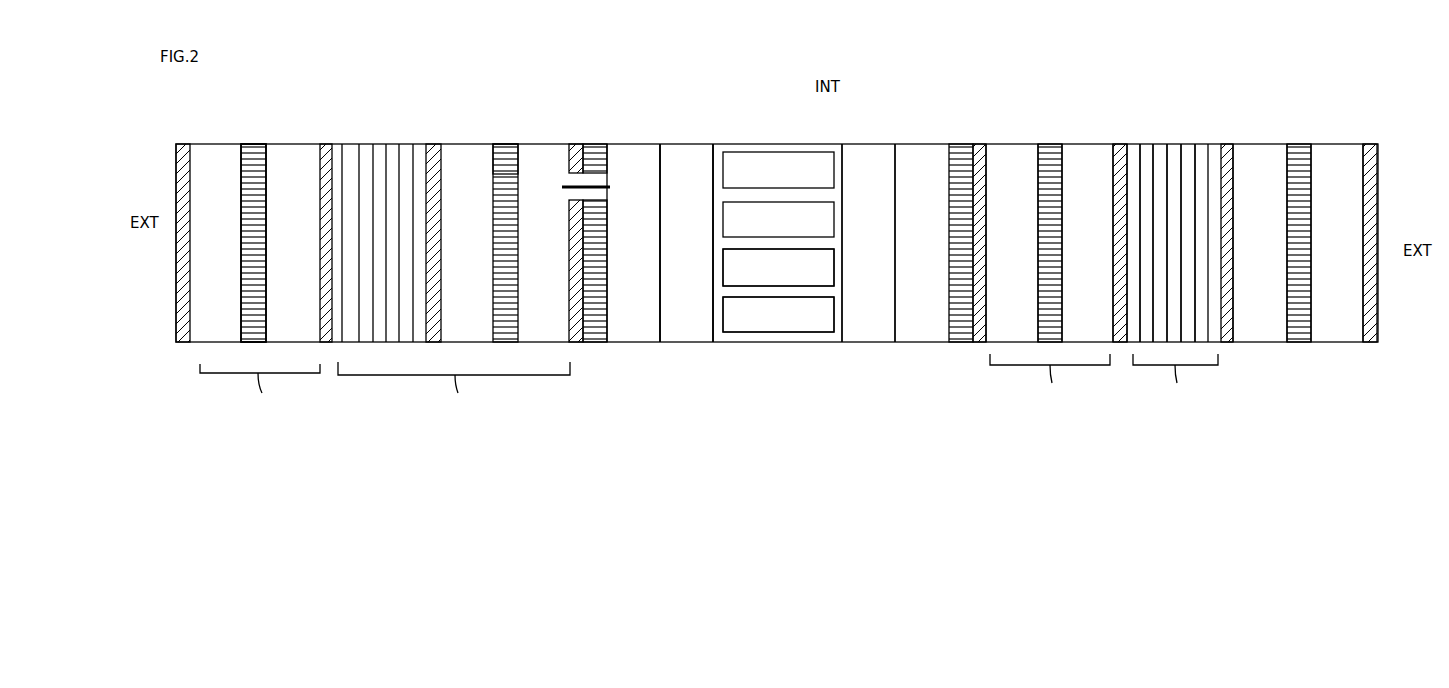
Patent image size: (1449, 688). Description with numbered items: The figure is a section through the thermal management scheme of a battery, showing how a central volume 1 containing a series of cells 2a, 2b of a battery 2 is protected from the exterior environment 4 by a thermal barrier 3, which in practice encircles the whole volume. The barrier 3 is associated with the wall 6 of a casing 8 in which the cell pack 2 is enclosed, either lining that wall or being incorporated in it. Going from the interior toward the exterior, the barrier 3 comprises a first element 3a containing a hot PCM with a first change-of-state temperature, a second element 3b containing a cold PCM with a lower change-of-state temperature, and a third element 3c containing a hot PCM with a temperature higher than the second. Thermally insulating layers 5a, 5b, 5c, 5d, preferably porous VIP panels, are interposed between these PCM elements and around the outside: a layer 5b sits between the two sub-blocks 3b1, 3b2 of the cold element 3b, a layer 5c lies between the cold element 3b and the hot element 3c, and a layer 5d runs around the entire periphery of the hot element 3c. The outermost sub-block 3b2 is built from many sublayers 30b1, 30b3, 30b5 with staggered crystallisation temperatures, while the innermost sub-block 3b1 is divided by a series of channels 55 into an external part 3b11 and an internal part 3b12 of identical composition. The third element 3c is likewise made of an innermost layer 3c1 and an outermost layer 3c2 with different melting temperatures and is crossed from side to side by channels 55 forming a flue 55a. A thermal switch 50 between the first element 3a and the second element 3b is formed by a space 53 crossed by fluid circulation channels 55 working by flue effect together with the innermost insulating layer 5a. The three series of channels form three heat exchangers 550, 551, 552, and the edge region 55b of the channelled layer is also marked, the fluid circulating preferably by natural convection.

The central volume 1 is at (819, 337).
The battery 2 is at (777, 140).
The cell 2a is at (763, 318).
The cell 2b is at (794, 272).
The thermal barrier 3 is at (1096, 122).
The first element 3a is at (697, 318).
The second element 3b is at (454, 393).
The innermost sub-block 3b1 is at (1050, 382).
The outermost sub-block 3b2 is at (1175, 379).
The external part 3b11 is at (1079, 162).
The internal part 3b12 is at (1009, 160).
The third element 3c is at (260, 394).
The innermost layer 3c1 is at (1273, 334).
The outermost layer 3c2 is at (1349, 335).
The environment 4 is at (831, 232).
The thermally insulating layer 5a is at (575, 157).
The thermally insulating layer 5b is at (433, 147).
The thermally insulating layer 5c is at (326, 147).
The thermally insulating layer 5d is at (178, 147).
The wall 6 is at (842, 327).
The casing 8 is at (721, 130).
The sublayer 30b1 is at (1213, 157).
The sublayer 30b3 is at (1188, 157).
The sublayer 30b5 is at (1166, 157).
The thermal switch 50 is at (642, 160).
The space 53 is at (594, 157).
The fluid circulation channels 55 is at (500, 157).
The flue 55a is at (254, 160).
The insulating layer edge 55b is at (255, 339).
The heat exchanger 550 is at (613, 332).
The heat exchanger 551 is at (504, 130).
The heat exchanger 552 is at (243, 305).